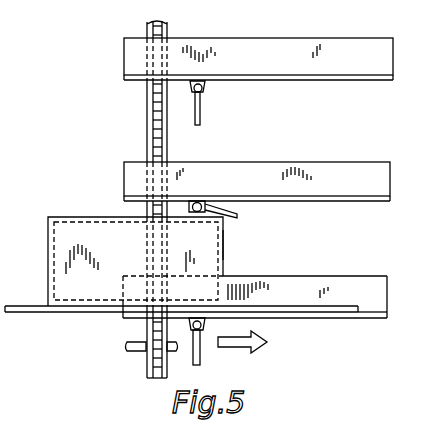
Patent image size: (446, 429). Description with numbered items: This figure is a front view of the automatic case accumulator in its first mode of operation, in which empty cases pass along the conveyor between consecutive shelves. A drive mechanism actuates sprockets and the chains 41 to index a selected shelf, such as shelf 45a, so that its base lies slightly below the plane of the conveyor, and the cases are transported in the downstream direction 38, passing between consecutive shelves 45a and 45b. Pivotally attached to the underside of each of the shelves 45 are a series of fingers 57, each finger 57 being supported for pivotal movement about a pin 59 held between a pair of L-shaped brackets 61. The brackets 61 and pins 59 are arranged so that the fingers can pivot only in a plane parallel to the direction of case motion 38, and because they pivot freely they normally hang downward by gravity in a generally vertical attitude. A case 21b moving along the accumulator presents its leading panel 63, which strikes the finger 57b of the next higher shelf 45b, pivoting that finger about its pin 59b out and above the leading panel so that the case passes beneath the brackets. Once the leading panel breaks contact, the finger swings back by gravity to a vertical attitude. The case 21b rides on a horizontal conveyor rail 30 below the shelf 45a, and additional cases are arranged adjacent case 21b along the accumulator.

The shelf 45 is at (123, 58).
The shelf 45b is at (122, 170).
The shelf 45a is at (348, 254).
The horizontal rail 30 is at (22, 306).
The case 21b is at (62, 233).
The leading panel 63 is at (226, 242).
The L-shaped bracket 61 is at (206, 86).
The pin 59 is at (203, 92).
The finger 57 is at (202, 121).
The pin 59b is at (200, 203).
The finger 57b is at (250, 213).
The chain 41 is at (150, 358).
The downstream direction 38 is at (236, 338).